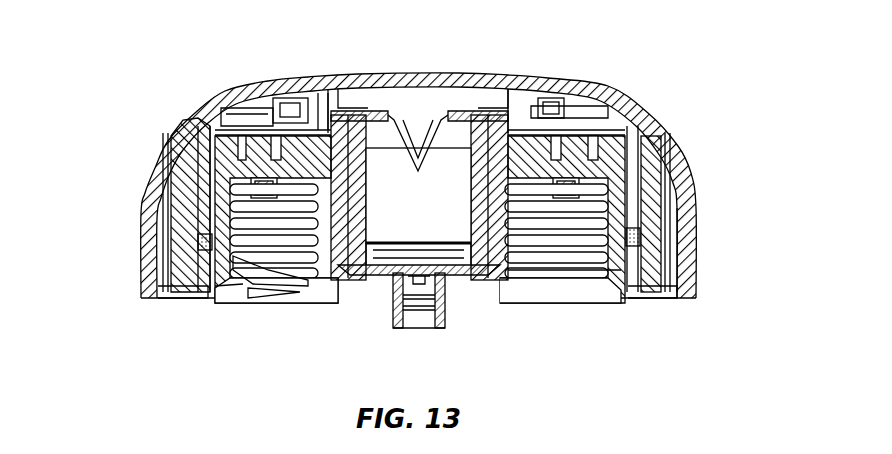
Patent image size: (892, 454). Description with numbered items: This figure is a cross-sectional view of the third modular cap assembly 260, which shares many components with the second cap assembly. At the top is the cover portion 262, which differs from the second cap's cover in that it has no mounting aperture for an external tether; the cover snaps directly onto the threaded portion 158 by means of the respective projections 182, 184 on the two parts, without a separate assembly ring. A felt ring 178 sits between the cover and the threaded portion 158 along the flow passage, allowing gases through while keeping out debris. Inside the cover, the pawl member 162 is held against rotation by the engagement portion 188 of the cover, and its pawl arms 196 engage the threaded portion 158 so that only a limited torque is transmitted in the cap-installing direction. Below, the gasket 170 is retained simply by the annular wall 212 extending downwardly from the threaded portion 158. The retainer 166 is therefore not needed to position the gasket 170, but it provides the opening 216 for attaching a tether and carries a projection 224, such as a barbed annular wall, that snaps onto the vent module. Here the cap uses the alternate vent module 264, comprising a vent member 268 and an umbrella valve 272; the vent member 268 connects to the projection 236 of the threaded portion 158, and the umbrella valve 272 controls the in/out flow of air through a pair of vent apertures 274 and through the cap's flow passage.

The cap assembly 260 is at (128, 60).
The pawl arms 196 is at (248, 118).
The engagement portion 188 is at (295, 108).
The pawl member 162 is at (321, 120).
The umbrella valve 272 is at (398, 110).
The cover portion 262 is at (500, 70).
The projection 236 is at (540, 112).
The threaded portion 158 is at (605, 206).
The felt ring 178 is at (632, 224).
The projection 182 is at (190, 278).
The projection 184 is at (620, 282).
The gasket 170 is at (566, 264).
The annular wall 212 is at (527, 232).
The retainer 166 is at (440, 282).
The opening 216 is at (410, 312).
The projection 224 is at (374, 272).
The vent module 264 is at (335, 282).
The vent member 268 is at (332, 192).
The vent apertures 274 is at (410, 166).